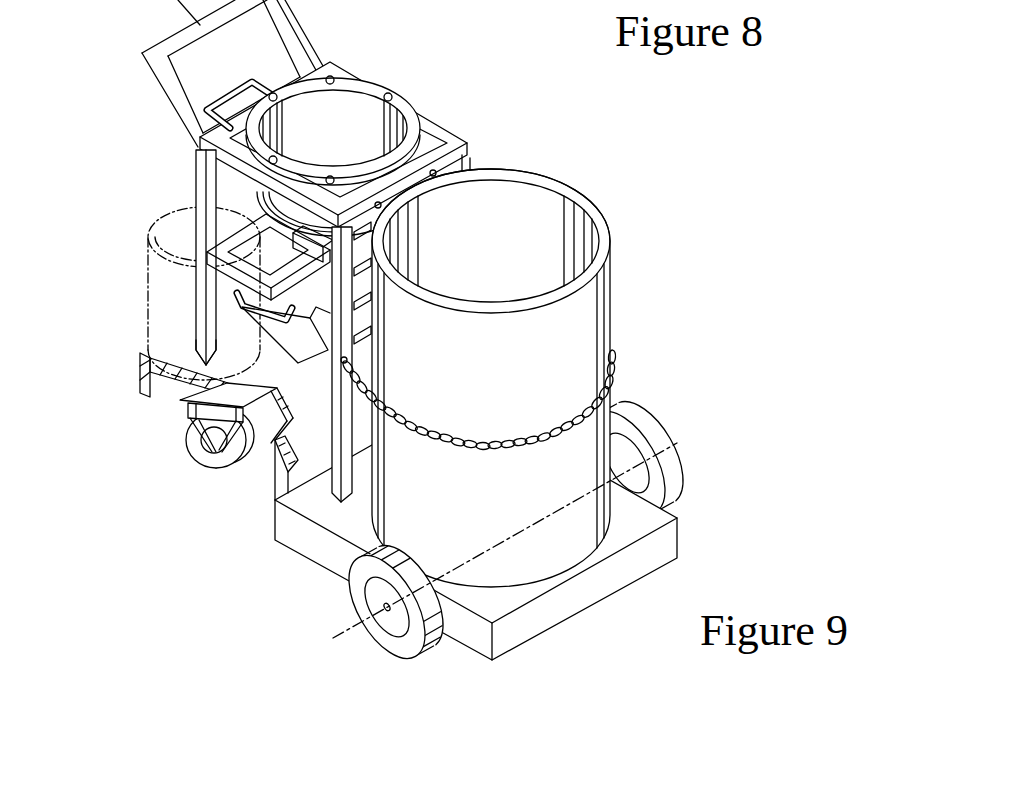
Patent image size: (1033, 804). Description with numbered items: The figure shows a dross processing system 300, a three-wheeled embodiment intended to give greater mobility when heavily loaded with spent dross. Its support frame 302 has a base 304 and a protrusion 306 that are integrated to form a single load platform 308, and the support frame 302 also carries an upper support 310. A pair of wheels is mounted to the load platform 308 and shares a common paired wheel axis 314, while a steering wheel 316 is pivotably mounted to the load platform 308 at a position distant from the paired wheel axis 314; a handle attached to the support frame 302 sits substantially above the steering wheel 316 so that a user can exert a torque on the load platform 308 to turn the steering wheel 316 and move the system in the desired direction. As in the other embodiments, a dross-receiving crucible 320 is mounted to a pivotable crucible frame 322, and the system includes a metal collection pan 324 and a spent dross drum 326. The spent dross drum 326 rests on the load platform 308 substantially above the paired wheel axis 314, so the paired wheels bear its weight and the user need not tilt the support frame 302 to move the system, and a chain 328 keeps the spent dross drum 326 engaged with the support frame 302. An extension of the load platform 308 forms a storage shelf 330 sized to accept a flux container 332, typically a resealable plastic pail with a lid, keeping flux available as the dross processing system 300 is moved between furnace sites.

The dross processing system 300 is at (417, 335).
The support frame 302 is at (187, 222).
The base 304 is at (300, 435).
The protrusion 306 is at (638, 527).
The load platform 308 is at (300, 542).
The upper support 310 is at (233, 170).
The paired wheel axis 314 is at (662, 452).
The steering wheel 316 is at (208, 433).
The dross-receiving crucible 320 is at (393, 125).
The pivotable crucible frame 322 is at (433, 133).
The metal collection pan 324 is at (242, 278).
The spent dross drum 326 is at (597, 295).
The chain 328 is at (607, 400).
The storage shelf 330 is at (183, 347).
The flux container 332 is at (148, 268).